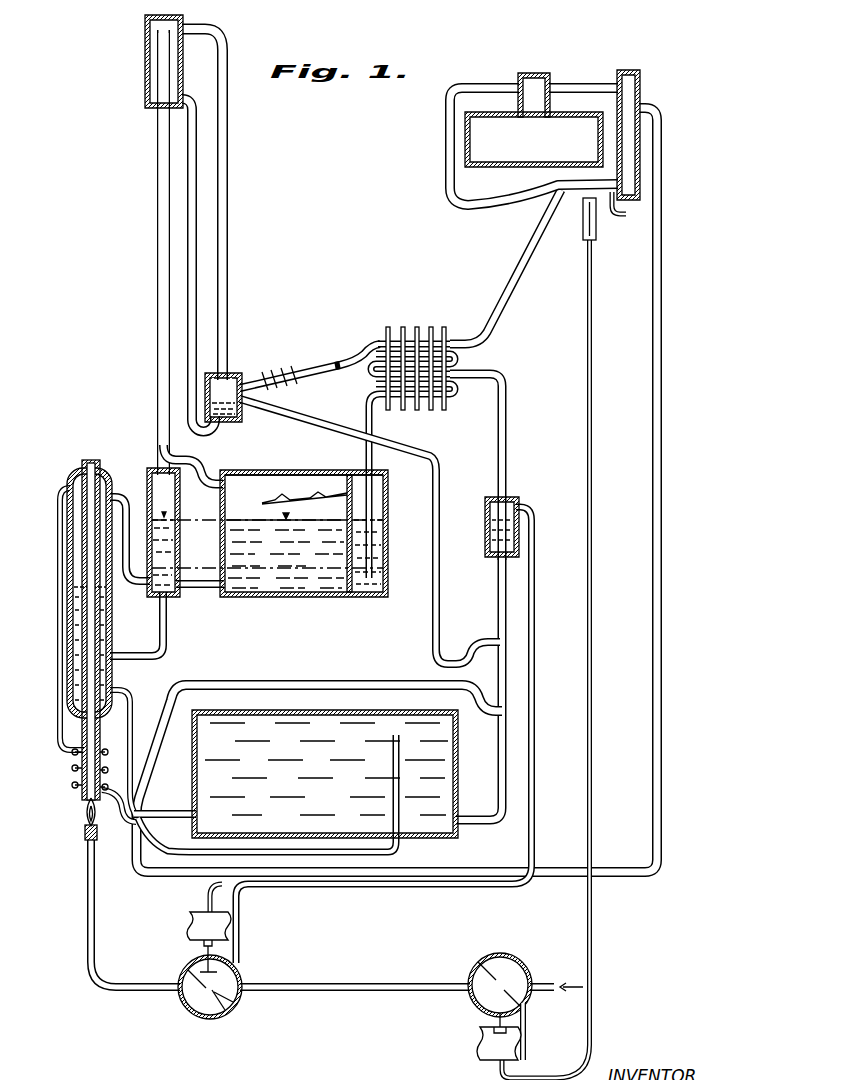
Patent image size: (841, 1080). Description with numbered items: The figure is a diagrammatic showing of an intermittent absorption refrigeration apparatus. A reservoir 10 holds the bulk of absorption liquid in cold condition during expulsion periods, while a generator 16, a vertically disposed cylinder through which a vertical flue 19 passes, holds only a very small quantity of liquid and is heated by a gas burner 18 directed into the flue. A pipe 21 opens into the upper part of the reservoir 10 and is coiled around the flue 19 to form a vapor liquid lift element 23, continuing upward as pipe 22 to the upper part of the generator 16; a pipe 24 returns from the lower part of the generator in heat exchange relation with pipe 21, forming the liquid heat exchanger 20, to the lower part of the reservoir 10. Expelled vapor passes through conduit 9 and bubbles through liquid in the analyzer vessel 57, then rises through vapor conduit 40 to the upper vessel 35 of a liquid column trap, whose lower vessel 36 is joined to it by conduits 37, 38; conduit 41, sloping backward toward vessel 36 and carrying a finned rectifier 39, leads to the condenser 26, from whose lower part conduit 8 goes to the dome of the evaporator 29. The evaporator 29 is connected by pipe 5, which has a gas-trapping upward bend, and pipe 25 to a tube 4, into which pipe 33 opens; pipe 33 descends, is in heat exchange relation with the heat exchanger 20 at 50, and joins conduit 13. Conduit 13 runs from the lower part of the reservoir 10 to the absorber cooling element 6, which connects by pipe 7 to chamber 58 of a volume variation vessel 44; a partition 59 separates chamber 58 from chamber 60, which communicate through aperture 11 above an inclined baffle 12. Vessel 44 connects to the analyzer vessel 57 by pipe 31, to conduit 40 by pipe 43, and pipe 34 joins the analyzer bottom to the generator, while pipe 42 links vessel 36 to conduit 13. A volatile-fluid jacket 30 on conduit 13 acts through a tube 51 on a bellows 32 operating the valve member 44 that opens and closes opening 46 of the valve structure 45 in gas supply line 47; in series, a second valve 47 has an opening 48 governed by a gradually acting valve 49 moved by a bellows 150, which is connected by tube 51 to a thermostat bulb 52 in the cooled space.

The tube 4 is at (636, 158).
The pipe 5 is at (623, 210).
The absorber cooling element 6 is at (454, 380).
The pipe 7 is at (287, 709).
The conduit 8 is at (528, 268).
The conduit 9 is at (125, 505).
The reservoir 10 is at (290, 836).
The aperture 11 is at (348, 480).
The trough or baffle 12 is at (262, 502).
The conduit 13 is at (498, 772).
The generator 16 is at (58, 530).
The gas burner 18 is at (85, 833).
The flue 19 is at (86, 640).
The liquid heat exchanger 20 is at (128, 830).
The pipe 21 is at (535, 672).
The pipe 22 is at (68, 598).
The vapor liquid lift element 23 is at (72, 767).
The pipe 24 is at (133, 733).
The pipe 25 is at (534, 130).
The condenser 26 is at (414, 469).
The evaporator 29 is at (550, 164).
The jacket 30 is at (485, 526).
The pipe 31 is at (200, 590).
The bellows 32 is at (190, 918).
The pipe 33 is at (663, 522).
The pipe 34 is at (162, 661).
The upper vessel 35 is at (145, 70).
The lower vessel 36 is at (238, 424).
The conduit 37 is at (187, 213).
The conduit 38 is at (229, 192).
The rectifier 39 is at (286, 370).
The vapor conduit 40 is at (158, 170).
The conduit 41 is at (345, 364).
The pipe 42 is at (441, 474).
The pipe 43 is at (200, 466).
The volume variation vessel 44 is at (255, 472).
The valve structure 45 is at (183, 1005).
The opening 46 is at (226, 1010).
The gas supply line 47 is at (87, 884).
The opening 48 is at (470, 1000).
The valve 49 is at (507, 968).
The heat exchange portion 50 is at (158, 792).
The tube 51 is at (593, 641).
The thermostat bulb 52 is at (596, 236).
The analyzer vessel 57 is at (181, 540).
The chamber 58 is at (377, 566).
The partition 59 is at (362, 594).
The chamber 60 is at (285, 552).
The bellows 150 is at (478, 1050).